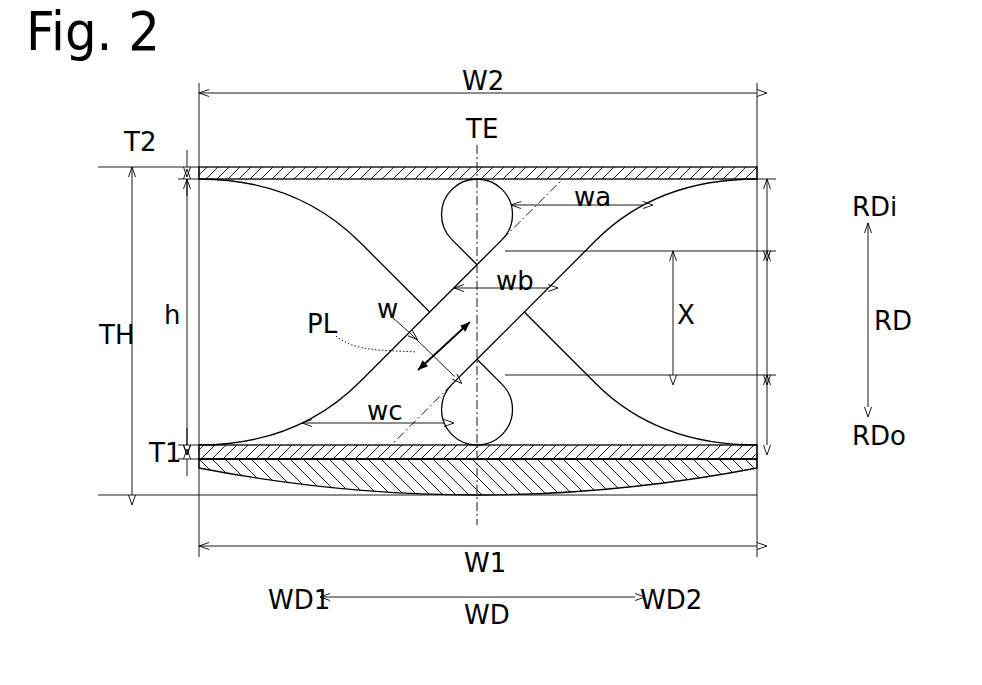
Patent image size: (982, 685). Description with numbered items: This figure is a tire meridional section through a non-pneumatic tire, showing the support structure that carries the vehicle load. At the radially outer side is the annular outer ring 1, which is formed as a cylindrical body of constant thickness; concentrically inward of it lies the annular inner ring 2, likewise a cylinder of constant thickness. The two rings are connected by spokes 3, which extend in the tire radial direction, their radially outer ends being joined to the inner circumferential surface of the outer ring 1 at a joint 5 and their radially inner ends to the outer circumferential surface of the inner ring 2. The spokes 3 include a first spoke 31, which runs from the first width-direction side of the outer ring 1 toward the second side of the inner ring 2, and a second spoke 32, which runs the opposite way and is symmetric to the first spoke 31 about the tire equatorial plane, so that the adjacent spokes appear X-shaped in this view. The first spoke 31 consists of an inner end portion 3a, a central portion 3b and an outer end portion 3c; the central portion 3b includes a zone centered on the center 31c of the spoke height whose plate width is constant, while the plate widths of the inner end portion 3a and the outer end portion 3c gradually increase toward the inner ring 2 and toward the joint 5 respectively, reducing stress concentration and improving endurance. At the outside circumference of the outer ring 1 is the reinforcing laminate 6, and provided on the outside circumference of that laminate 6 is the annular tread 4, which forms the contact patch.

The outer ring 1 is at (758, 452).
The inner ring 2 is at (758, 166).
The spokes 3 is at (503, 313).
The inner end portion 3a is at (655, 215).
The central portion 3b is at (656, 313).
The outer end portion 3c is at (786, 410).
The first spoke 31 is at (570, 266).
The center of the height of first spoke 31c is at (477, 311).
The second spoke 32 is at (378, 263).
The tread 4 is at (650, 488).
The joint 5 is at (289, 444).
The laminate 6 is at (758, 459).